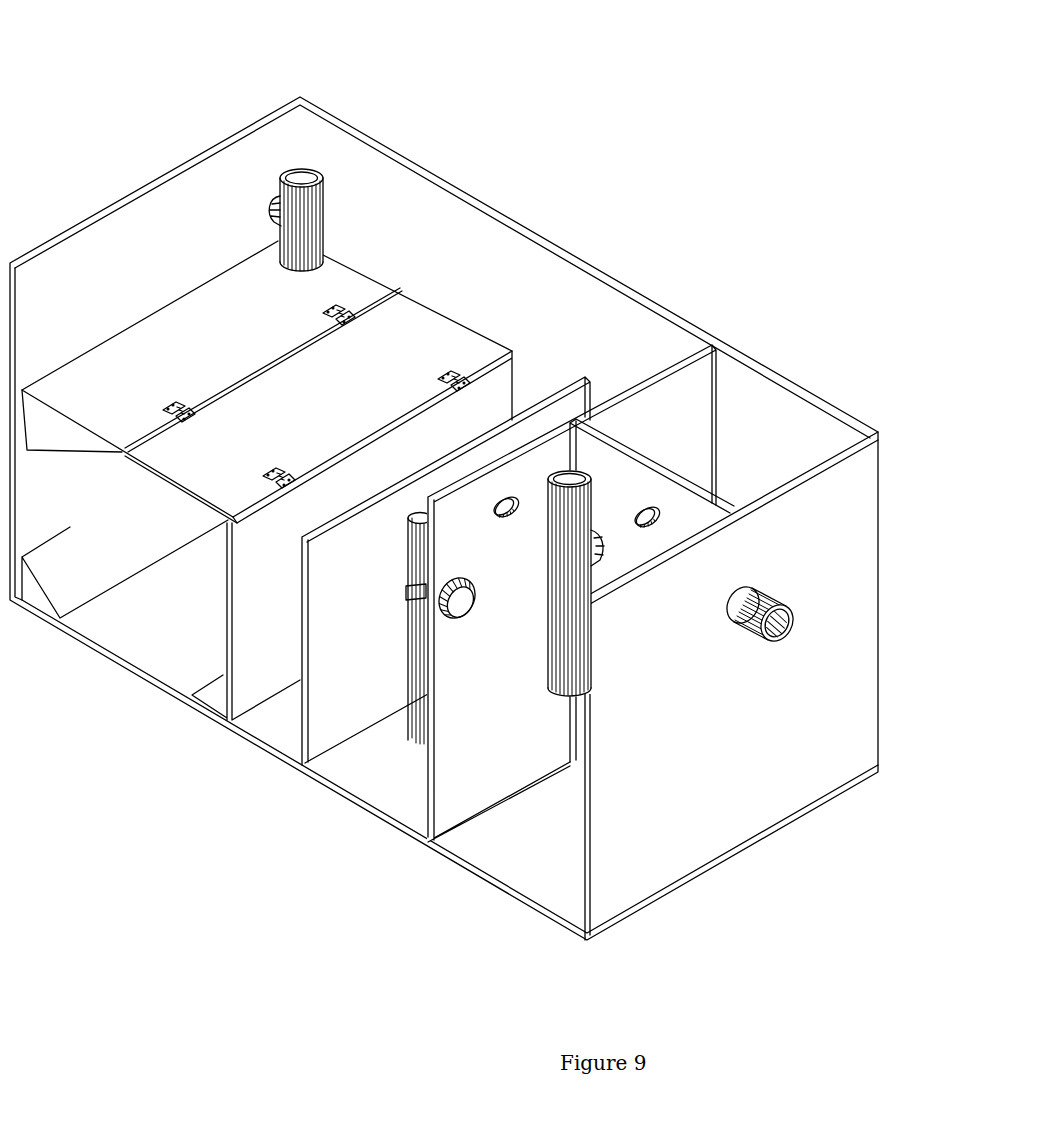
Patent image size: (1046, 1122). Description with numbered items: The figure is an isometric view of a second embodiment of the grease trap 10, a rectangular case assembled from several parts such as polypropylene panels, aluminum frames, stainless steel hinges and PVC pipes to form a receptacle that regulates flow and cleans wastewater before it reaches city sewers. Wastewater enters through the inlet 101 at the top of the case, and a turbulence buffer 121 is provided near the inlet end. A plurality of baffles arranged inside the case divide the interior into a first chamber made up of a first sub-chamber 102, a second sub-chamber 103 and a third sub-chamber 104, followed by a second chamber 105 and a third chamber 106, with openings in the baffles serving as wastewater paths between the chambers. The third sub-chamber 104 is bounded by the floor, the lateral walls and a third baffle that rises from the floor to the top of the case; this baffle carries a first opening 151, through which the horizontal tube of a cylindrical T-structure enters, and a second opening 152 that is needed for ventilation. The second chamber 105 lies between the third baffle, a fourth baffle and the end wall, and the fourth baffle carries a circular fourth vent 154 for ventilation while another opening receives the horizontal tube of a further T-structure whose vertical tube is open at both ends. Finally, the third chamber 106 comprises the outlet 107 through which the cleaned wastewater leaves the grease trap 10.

The grease trap 10 is at (596, 86).
The inlet 101 is at (268, 187).
The first sub-chamber 102 is at (167, 635).
The turbulence buffer 121 is at (160, 473).
The second sub-chamber 103 is at (287, 735).
The third sub-chamber 104 is at (387, 787).
The second chamber 105 is at (542, 863).
The third chamber 106 is at (815, 415).
The outlet 107 is at (776, 642).
The first opening 151 is at (453, 614).
The second opening 152 is at (518, 492).
The fourth vent 154 is at (658, 498).